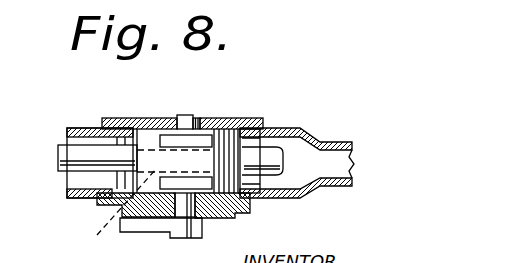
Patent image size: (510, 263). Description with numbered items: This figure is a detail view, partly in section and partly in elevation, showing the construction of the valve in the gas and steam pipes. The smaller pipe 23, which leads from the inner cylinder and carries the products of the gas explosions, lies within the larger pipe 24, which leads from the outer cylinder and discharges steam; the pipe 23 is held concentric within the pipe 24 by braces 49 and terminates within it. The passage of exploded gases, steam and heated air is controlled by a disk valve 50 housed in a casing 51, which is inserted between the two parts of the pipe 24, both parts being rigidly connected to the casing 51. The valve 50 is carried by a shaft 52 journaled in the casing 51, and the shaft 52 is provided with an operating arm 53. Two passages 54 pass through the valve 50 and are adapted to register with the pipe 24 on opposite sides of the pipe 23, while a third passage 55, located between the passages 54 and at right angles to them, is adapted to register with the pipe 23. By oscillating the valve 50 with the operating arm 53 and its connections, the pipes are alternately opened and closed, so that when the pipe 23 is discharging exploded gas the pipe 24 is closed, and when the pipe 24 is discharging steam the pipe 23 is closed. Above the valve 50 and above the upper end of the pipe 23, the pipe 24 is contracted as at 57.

The pipe 23 is at (170, 160).
The pipe 24 is at (77, 128).
The braces 49 is at (114, 178).
The disk valve 50 is at (174, 162).
The casing 51 is at (233, 214).
The shaft 52 is at (198, 119).
The operating arm 53 is at (150, 232).
The passages 54 is at (174, 138).
The passage 55 is at (116, 214).
The contraction 57 is at (345, 180).